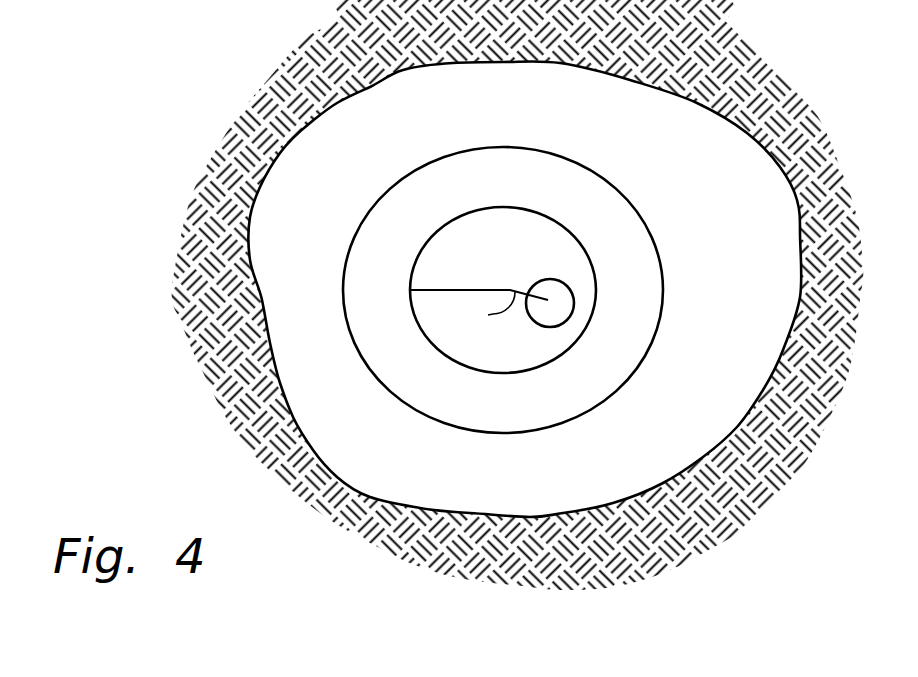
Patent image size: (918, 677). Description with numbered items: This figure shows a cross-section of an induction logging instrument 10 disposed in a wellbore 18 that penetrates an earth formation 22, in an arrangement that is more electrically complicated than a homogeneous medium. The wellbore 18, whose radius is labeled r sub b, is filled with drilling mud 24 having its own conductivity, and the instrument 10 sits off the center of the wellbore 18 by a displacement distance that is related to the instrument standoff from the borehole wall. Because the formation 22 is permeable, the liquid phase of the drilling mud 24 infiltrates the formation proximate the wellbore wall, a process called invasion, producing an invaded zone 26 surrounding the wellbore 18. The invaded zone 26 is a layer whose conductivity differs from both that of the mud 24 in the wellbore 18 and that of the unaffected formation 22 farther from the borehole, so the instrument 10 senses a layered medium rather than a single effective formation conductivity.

The instrument 10 is at (568, 318).
The wellbore 18 is at (557, 250).
The formation 22 is at (522, 123).
The mud 24 is at (523, 251).
The invaded zone 26 is at (368, 253).